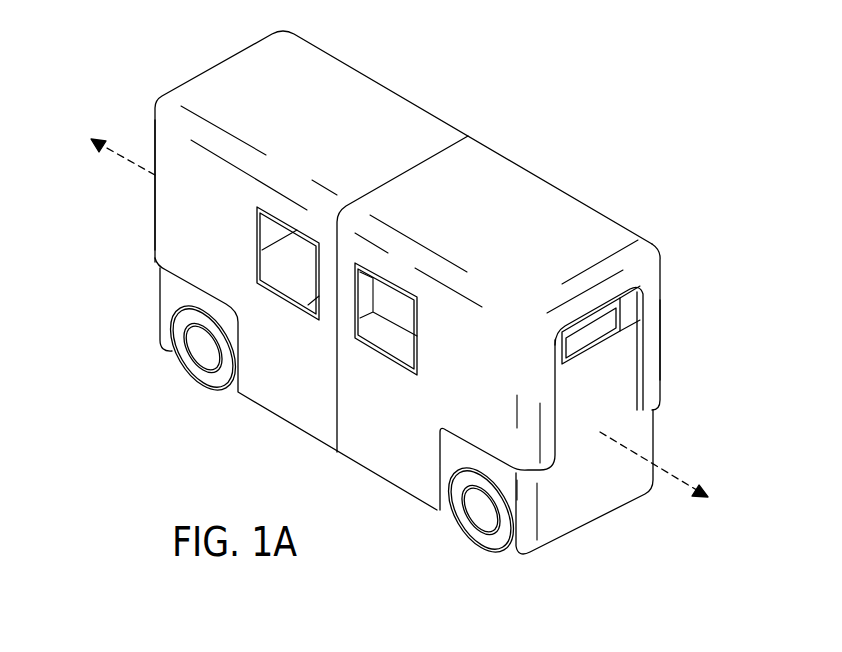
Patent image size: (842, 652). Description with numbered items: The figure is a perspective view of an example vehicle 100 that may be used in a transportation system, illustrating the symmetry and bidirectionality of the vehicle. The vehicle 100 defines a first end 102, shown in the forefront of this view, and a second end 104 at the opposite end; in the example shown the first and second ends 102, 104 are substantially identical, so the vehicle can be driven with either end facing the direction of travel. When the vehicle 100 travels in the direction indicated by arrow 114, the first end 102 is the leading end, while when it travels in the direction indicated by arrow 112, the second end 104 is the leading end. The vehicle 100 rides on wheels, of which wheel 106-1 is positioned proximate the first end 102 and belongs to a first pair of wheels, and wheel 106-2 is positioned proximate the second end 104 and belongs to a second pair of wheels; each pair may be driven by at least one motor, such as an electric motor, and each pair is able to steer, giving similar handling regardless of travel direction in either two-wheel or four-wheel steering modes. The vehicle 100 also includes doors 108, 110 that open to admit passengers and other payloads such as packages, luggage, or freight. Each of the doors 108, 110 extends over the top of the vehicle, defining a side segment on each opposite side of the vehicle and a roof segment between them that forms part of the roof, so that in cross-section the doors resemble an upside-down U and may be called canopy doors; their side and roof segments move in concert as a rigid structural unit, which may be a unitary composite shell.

The vehicle 100 is at (617, 95).
The first end 102 is at (721, 365).
The second end 104 is at (100, 245).
The wheel 106-1 is at (478, 552).
The wheel 106-2 is at (200, 392).
The door 108 is at (413, 98).
The door 110 is at (548, 180).
The arrow 112 is at (127, 160).
The arrow 114 is at (673, 477).